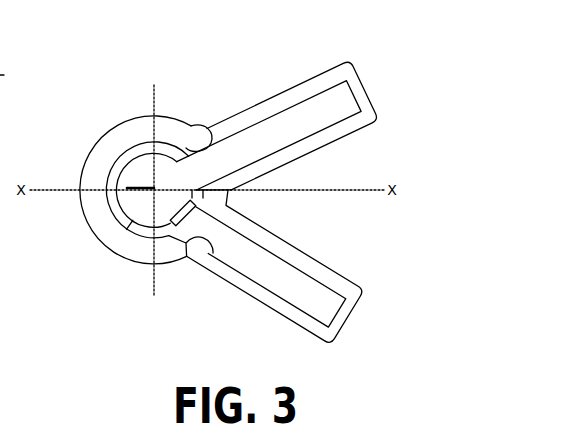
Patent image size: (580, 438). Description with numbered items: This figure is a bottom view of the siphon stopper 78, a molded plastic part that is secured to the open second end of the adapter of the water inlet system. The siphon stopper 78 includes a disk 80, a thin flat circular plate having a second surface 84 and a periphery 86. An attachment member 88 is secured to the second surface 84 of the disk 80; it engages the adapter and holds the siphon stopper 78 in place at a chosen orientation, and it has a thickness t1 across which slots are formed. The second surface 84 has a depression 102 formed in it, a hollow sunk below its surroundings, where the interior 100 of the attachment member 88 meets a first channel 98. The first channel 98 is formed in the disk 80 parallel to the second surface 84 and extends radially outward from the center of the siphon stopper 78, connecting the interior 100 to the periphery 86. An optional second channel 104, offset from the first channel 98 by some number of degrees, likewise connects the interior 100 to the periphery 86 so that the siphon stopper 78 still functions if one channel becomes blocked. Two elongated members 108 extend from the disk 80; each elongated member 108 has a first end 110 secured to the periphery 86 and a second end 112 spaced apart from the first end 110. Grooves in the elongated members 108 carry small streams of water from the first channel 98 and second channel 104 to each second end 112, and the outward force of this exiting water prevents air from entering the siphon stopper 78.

The siphon stopper 78 is at (226, 36).
The disk 80 is at (107, 112).
The second surface 84 is at (139, 156).
The periphery 86 is at (181, 117).
The attachment member 88 is at (106, 241).
The first channel 98 is at (204, 130).
The interior 100 is at (123, 215).
The depression 102 is at (140, 178).
The second channel 104 is at (201, 262).
The elongated member 108 is at (307, 117).
The first end 110 is at (230, 188).
The second end 112 is at (371, 90).
The thickness t1 is at (158, 194).